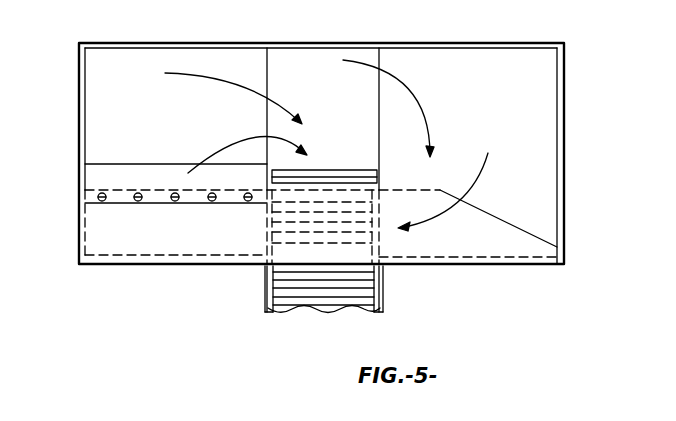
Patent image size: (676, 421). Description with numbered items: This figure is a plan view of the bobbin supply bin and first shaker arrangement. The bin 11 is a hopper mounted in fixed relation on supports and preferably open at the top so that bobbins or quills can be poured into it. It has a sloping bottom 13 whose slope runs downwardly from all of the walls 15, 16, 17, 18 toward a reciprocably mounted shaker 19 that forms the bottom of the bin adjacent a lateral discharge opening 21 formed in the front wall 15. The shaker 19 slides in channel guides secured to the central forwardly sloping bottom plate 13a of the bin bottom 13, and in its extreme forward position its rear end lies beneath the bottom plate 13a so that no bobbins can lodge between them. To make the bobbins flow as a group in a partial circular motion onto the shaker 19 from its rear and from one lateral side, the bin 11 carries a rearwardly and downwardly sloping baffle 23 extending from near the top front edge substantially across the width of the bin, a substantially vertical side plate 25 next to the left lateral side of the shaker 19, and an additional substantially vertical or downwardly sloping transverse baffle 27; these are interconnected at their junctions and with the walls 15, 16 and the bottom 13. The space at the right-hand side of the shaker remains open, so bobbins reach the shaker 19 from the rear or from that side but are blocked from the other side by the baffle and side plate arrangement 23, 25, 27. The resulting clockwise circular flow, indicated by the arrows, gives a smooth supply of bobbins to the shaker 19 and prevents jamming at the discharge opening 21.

The bin 11 is at (478, 45).
The sloping bottom 13 is at (512, 138).
The bottom plate 13a is at (318, 57).
The front wall 15 is at (172, 265).
The wall 16 is at (79, 138).
The wall 17 is at (208, 44).
The wall 18 is at (557, 155).
The shaker 19 is at (312, 311).
The discharge opening 21 is at (362, 270).
The baffle 23 is at (457, 250).
The side plate 25 is at (273, 165).
The transverse baffle 27 is at (95, 176).